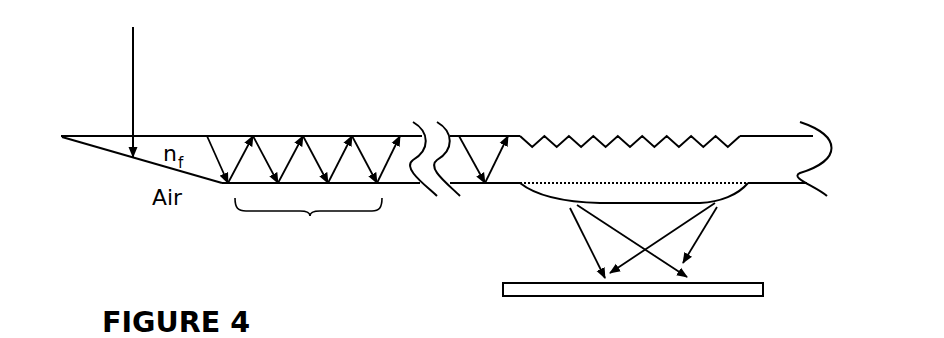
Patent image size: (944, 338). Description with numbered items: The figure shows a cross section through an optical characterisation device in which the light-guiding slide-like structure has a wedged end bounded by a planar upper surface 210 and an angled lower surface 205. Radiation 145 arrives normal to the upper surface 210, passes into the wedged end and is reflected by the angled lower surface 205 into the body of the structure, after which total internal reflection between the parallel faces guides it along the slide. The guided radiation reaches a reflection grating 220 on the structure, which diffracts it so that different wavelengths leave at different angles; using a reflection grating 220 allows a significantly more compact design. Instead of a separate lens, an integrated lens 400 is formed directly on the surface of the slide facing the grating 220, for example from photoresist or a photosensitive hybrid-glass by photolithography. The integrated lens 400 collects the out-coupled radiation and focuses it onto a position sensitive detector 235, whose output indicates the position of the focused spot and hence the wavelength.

The radiation 145 is at (133, 77).
The upper surface 210 is at (173, 136).
The angled lower surface 205 is at (125, 160).
The reflection grating 220 is at (605, 133).
The integrated lens 400 is at (547, 197).
The position sensitive detector 235 is at (717, 292).